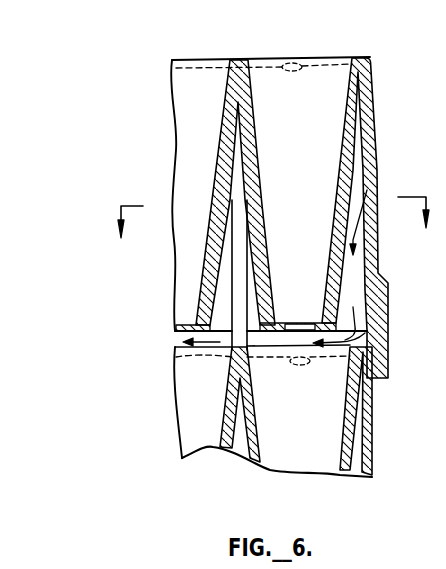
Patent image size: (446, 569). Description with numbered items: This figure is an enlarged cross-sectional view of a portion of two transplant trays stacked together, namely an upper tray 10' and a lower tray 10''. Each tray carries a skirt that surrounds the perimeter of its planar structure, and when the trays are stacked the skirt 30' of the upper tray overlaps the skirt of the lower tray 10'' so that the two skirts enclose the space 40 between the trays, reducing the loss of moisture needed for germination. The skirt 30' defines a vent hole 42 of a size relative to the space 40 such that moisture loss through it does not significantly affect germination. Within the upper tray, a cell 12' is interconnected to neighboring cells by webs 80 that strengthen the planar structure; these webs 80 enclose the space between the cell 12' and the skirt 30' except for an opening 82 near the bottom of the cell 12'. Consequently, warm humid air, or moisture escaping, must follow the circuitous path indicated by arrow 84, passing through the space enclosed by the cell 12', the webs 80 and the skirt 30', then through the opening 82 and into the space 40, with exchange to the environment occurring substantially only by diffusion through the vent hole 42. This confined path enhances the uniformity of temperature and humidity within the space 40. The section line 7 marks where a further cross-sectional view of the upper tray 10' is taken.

The tray 10' is at (308, 211).
The cell 12' is at (292, 194).
The skirt 30' is at (383, 218).
The arrow 84 is at (390, 175).
The vent hole 42 is at (372, 202).
The web 80 is at (348, 308).
The opening 82 is at (388, 342).
The space 40 is at (255, 339).
The tray 10'' is at (291, 429).
The section line 7— 7 is at (274, 230).